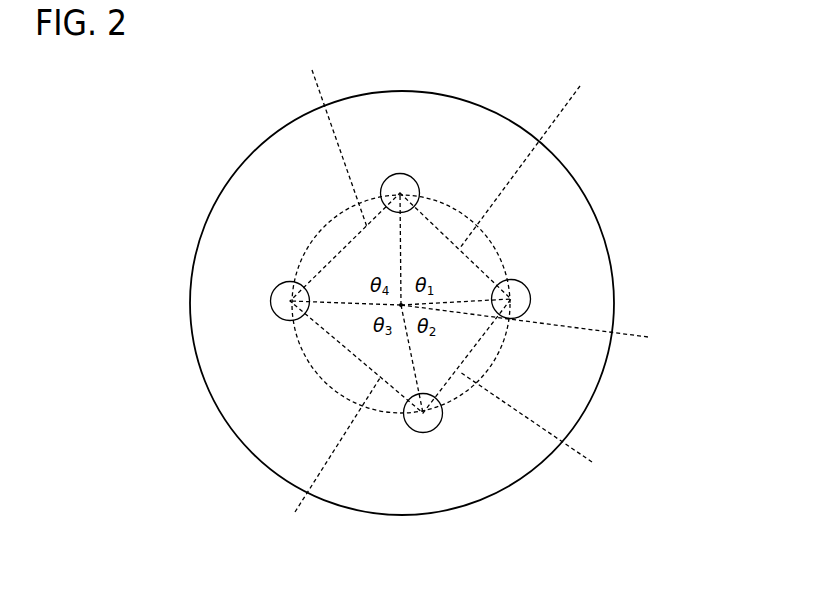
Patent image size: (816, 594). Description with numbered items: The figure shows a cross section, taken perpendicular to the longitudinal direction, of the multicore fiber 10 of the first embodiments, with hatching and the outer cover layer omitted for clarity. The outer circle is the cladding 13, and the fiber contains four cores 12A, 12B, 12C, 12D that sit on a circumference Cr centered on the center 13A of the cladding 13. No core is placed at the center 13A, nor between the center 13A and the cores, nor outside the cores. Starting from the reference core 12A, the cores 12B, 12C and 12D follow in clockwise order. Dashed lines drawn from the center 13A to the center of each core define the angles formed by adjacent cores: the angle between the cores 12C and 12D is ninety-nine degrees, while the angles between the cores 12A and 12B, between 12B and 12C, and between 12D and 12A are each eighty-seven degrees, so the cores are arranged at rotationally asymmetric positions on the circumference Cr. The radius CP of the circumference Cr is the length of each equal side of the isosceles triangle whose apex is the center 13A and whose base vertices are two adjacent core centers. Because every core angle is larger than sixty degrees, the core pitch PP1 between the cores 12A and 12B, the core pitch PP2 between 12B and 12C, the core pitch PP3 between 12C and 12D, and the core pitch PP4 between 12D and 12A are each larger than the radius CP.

The multicore fiber 10 is at (587, 147).
The core 12A is at (401, 190).
The core 12B is at (512, 299).
The core 12C is at (425, 418).
The core 12D is at (290, 301).
The cladding 13 is at (245, 417).
The center of the cladding 13A is at (542, 328).
The radius of the circumference CP is at (436, 198).
The circumference Cr is at (303, 243).
The core pitch PP1 is at (543, 162).
The core pitch PP2 is at (547, 424).
The core pitch PP3 is at (327, 457).
The core pitch PP4 is at (331, 136).